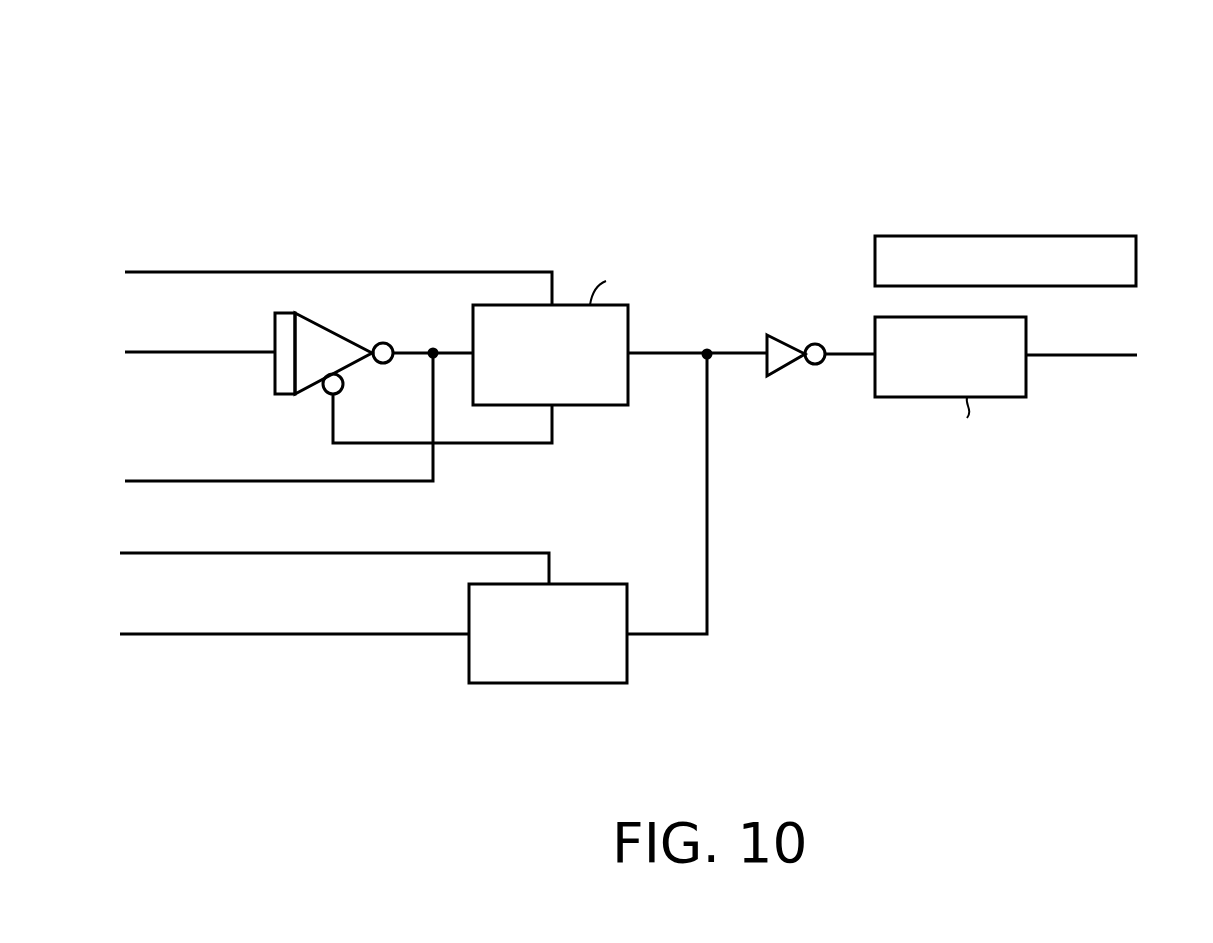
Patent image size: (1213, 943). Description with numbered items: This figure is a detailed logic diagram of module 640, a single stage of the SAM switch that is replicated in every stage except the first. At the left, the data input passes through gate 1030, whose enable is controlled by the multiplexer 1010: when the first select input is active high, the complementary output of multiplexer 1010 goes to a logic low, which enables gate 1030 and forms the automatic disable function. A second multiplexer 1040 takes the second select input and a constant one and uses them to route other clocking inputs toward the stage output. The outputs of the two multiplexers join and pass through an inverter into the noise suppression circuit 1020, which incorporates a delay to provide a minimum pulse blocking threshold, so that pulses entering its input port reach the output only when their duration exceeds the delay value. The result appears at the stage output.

The module 640 is at (742, 167).
The gate 1030 is at (275, 394).
The multiplexer 1010 is at (608, 405).
The multiplexer 1040 is at (627, 683).
The noise suppression circuit 1020 is at (1026, 397).